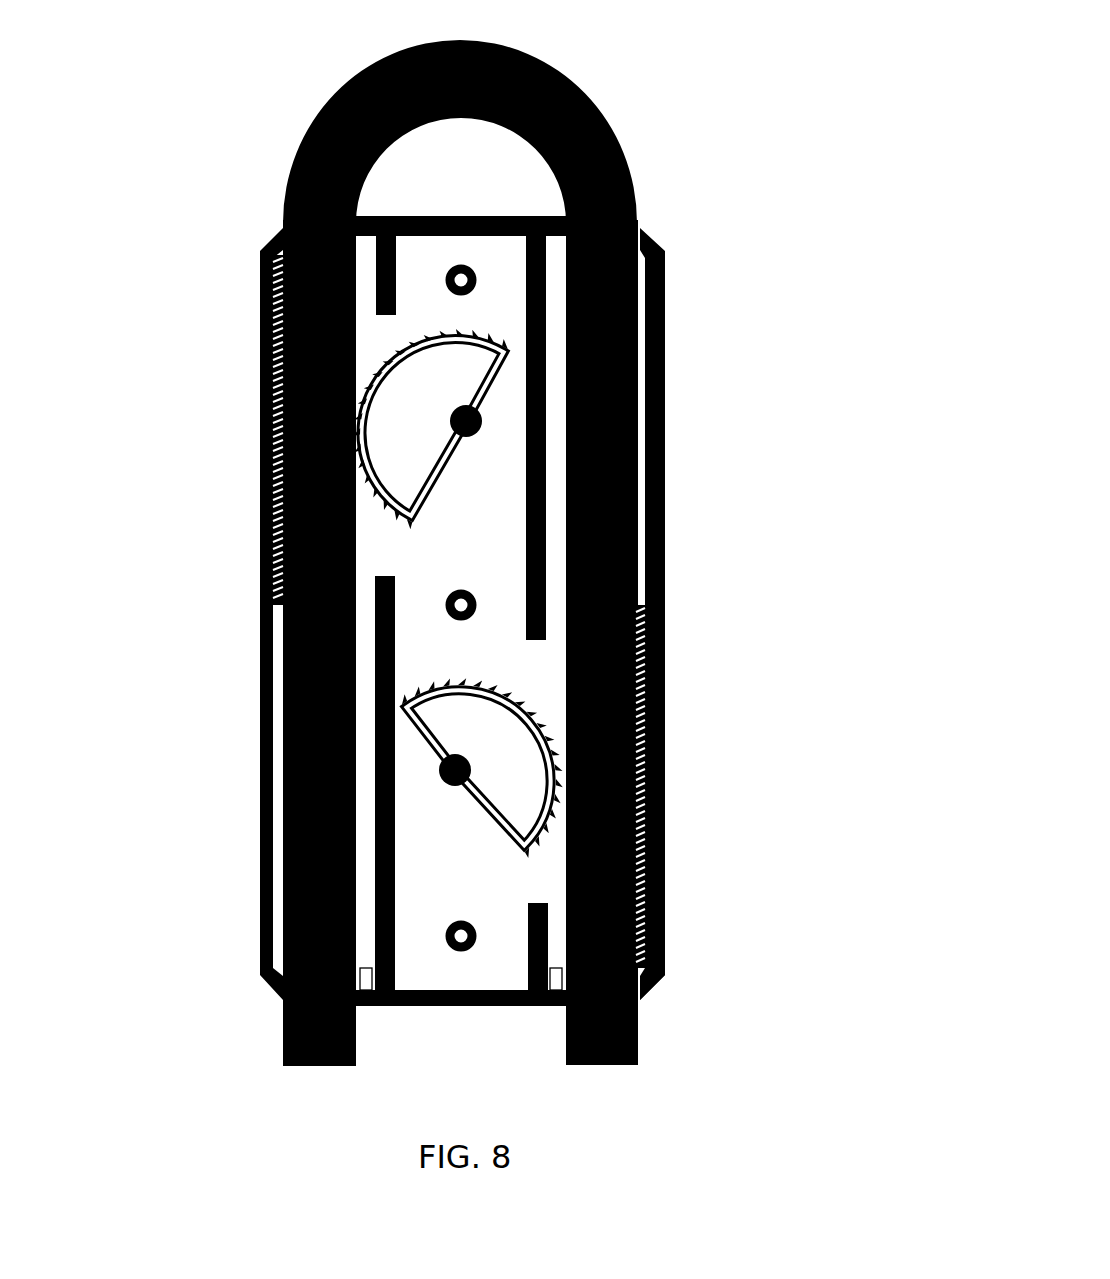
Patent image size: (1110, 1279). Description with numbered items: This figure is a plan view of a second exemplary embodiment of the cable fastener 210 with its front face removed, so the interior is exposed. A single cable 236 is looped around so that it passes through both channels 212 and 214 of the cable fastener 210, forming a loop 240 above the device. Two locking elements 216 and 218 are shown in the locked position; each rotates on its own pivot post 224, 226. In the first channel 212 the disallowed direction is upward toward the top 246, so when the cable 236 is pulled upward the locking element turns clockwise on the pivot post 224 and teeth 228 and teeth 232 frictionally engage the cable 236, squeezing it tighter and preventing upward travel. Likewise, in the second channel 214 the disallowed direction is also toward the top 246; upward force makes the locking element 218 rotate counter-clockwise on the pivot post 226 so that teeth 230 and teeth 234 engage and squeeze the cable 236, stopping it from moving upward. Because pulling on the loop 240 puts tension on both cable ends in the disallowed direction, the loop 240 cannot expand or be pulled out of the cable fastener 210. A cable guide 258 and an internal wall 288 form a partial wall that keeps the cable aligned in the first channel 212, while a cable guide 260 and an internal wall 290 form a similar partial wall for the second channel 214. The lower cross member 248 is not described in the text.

The cable fastener 210 is at (240, 196).
The channel 212 is at (362, 968).
The channel 214 is at (544, 968).
The locking element 216 is at (430, 447).
The locking element 218 is at (487, 803).
The pivot post 224 is at (470, 410).
The pivot post 226 is at (428, 770).
The teeth 228 is at (252, 373).
The teeth 230 is at (657, 682).
The teeth 232 is at (252, 607).
The teeth 234 is at (652, 968).
The cable 236 is at (628, 192).
The loop 240 is at (582, 83).
The top 246 is at (410, 208).
The lower cross bar 248 is at (445, 998).
The cable guide 258 is at (389, 570).
The cable guide 260 is at (520, 478).
The internal wall 288 is at (390, 240).
The internal wall 290 is at (520, 938).